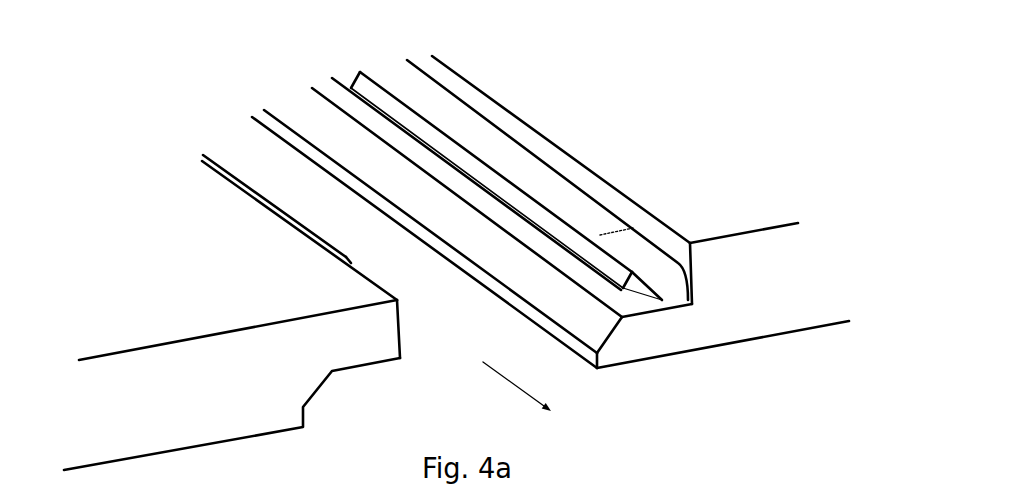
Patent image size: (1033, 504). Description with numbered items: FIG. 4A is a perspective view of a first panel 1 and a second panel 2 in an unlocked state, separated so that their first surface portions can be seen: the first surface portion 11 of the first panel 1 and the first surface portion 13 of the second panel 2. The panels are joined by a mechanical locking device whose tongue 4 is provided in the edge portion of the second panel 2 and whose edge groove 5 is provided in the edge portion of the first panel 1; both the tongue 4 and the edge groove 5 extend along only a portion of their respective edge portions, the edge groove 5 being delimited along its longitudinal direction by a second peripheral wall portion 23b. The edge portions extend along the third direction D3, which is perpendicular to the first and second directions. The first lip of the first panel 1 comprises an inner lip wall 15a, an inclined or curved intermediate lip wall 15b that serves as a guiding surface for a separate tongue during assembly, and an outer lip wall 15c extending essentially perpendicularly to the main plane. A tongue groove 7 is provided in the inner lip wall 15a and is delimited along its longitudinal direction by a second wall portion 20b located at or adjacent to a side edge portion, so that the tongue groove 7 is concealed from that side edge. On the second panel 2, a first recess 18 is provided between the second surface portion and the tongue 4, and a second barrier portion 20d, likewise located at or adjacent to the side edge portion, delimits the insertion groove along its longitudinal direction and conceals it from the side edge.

The first panel 1 is at (550, 194).
The second panel 2 is at (238, 312).
The tongue 4 is at (295, 202).
The edge groove 5 is at (421, 84).
The tongue groove 7 is at (551, 226).
The first surface portion 11 is at (640, 177).
The first surface portion 13 is at (362, 290).
The inner lip wall 15a is at (523, 236).
The intermediate lip wall 15b is at (535, 295).
The outer lip wall 15c is at (475, 273).
The first recess 18 is at (348, 394).
The second wall portion 20b is at (661, 298).
The second barrier portion 20d is at (381, 346).
The second peripheral wall portion 23b is at (683, 308).
The third direction D3 is at (531, 395).